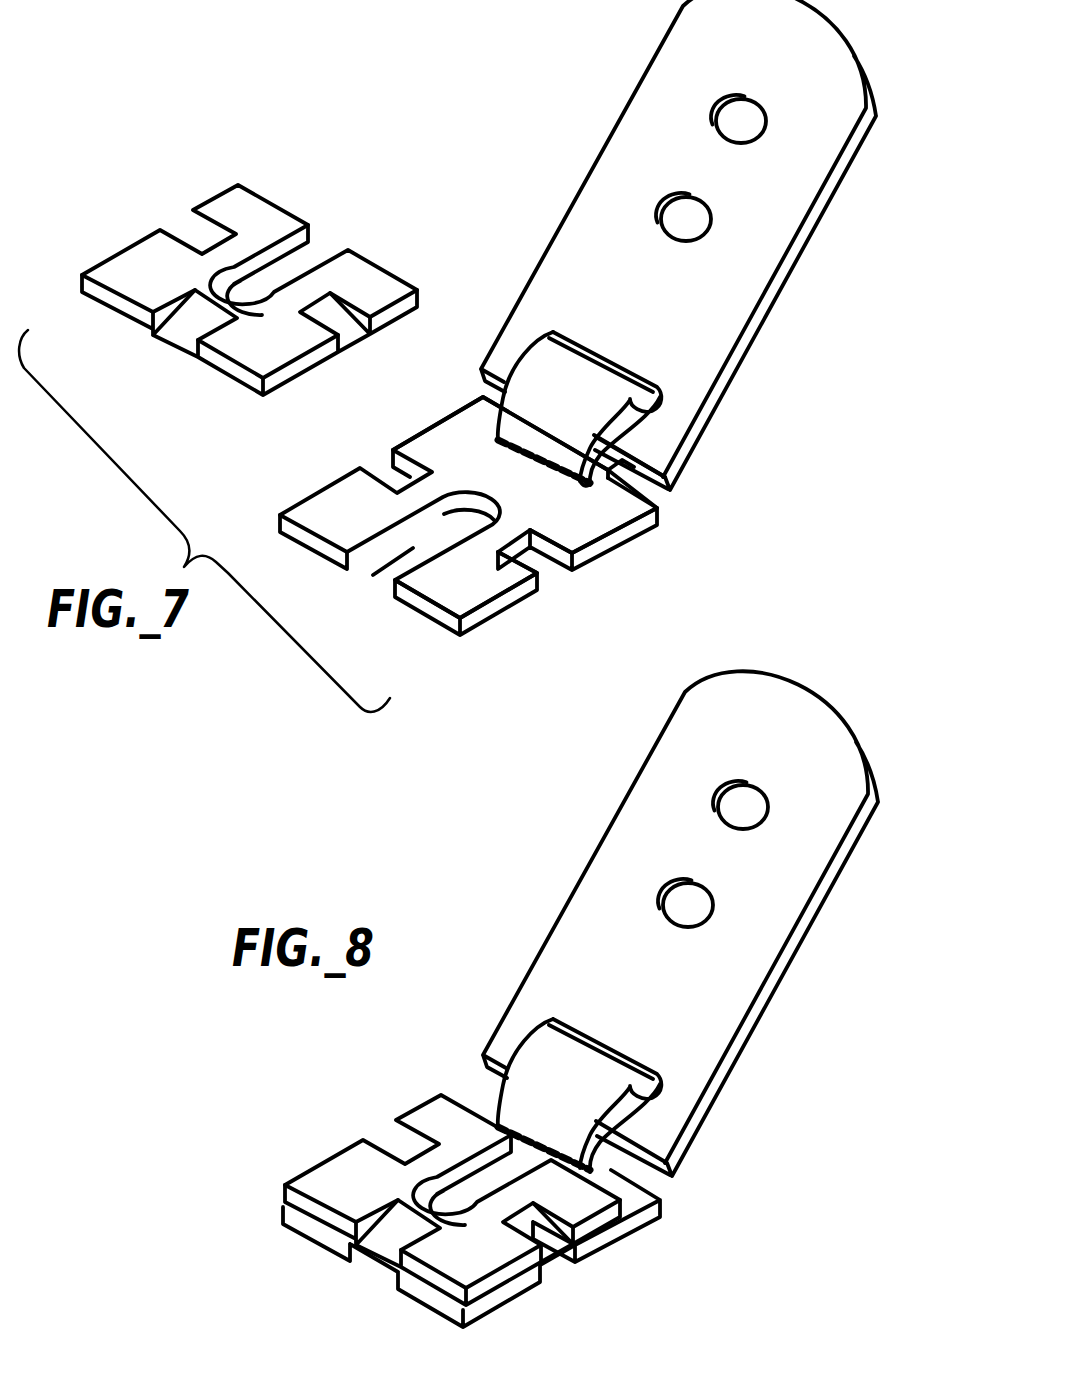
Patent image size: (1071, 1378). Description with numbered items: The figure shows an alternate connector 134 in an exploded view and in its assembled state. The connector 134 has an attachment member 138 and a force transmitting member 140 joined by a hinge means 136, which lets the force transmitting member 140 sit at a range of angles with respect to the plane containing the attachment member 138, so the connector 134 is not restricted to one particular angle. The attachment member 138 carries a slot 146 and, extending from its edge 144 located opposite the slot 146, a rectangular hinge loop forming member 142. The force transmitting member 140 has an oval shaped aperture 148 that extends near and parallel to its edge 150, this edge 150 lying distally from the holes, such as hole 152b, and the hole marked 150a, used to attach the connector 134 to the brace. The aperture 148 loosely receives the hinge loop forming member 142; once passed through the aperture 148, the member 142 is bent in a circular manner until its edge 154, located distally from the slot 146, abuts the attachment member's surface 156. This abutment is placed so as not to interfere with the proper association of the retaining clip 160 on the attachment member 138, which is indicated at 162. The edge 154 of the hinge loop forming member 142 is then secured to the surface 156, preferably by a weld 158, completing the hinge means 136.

In FIG. 7, the connector 134 is at (540, 105).
In FIG. 8, the connector 134 is at (555, 878).
In FIG. 7, the hinge means 136 is at (632, 423).
In FIG. 7, the attachment member 138 is at (505, 607).
In FIG. 7, the force transmitting member 140 is at (555, 218).
In FIG. 7, the hinge loop forming member 142 is at (570, 363).
In FIG. 7, the edge 144 is at (665, 494).
In FIG. 7, the slot 146 is at (415, 548).
In FIG. 7, the oval shaped aperture 148 is at (678, 245).
In FIG. 7, the edge 150 is at (488, 388).
In FIG. 7, the hole 150a is at (718, 86).
In FIG. 7, the hole 152b is at (658, 196).
In FIG. 7, the edge 154 is at (470, 420).
In FIG. 7, the surface 156 is at (550, 511).
In FIG. 7, the weld 158 is at (580, 484).
In FIG. 7, the retaining clip 160 is at (165, 195).
In FIG. 8, the association of retaining clip on attachment member 162 is at (320, 1122).